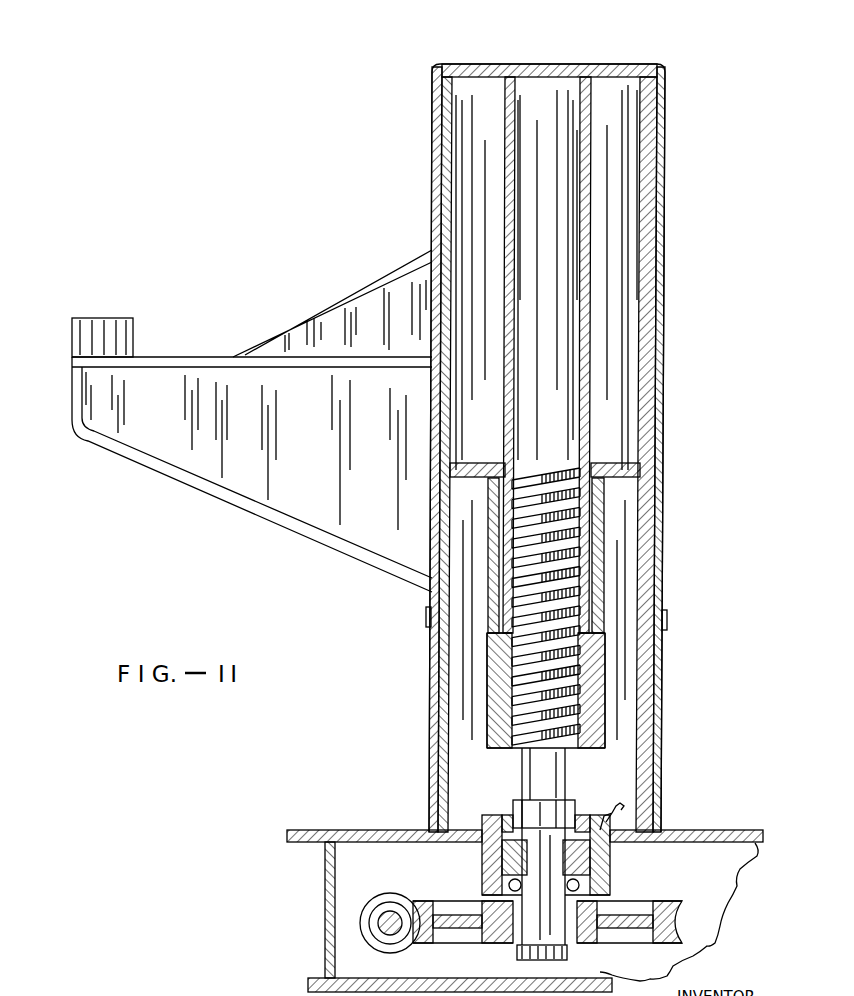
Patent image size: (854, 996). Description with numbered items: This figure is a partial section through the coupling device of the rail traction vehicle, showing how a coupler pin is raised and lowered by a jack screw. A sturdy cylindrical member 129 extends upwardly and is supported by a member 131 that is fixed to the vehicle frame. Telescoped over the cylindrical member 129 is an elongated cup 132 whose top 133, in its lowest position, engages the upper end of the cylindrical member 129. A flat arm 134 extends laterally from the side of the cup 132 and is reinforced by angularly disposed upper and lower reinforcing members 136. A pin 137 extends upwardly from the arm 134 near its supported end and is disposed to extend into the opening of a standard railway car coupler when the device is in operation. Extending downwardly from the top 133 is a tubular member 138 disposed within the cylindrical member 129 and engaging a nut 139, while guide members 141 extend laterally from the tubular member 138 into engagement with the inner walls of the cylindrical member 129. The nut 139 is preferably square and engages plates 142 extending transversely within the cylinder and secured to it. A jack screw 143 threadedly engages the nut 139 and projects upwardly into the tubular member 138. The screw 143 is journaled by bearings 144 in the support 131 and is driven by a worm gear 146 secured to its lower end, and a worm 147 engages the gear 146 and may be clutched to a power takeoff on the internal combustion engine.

The cylindrical member 129 is at (655, 168).
The supporting member 131 is at (363, 833).
The elongated cup 132 is at (660, 256).
The top 133 is at (615, 68).
The flat arm 134 is at (193, 358).
The reinforcing members 136 is at (357, 283).
The pin 137 is at (92, 328).
The tubular member 138 is at (583, 103).
The nut 139 is at (603, 690).
The guide members 141 is at (470, 463).
The plates 142 is at (604, 538).
The jack screw 143 is at (561, 776).
The bearings 144 is at (595, 882).
The worm gear 146 is at (672, 905).
The worm 147 is at (391, 910).